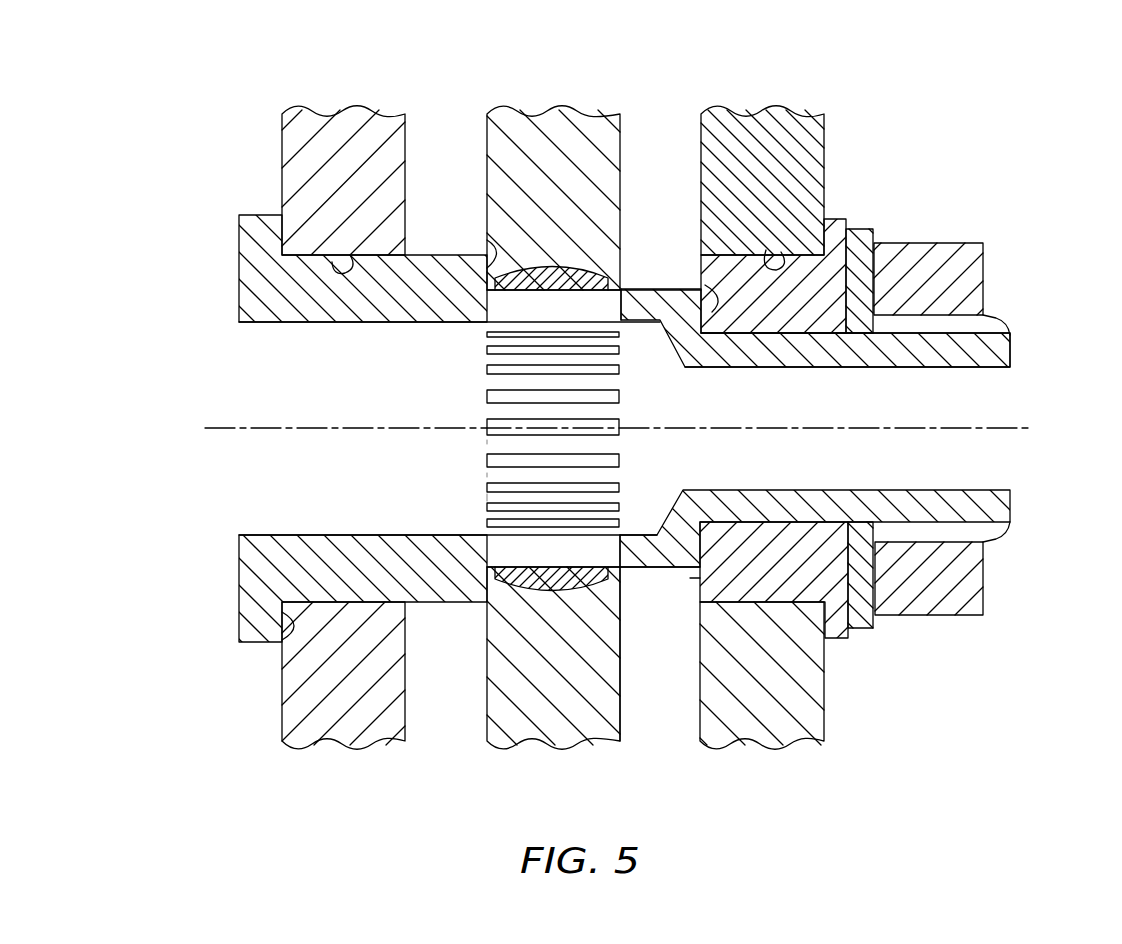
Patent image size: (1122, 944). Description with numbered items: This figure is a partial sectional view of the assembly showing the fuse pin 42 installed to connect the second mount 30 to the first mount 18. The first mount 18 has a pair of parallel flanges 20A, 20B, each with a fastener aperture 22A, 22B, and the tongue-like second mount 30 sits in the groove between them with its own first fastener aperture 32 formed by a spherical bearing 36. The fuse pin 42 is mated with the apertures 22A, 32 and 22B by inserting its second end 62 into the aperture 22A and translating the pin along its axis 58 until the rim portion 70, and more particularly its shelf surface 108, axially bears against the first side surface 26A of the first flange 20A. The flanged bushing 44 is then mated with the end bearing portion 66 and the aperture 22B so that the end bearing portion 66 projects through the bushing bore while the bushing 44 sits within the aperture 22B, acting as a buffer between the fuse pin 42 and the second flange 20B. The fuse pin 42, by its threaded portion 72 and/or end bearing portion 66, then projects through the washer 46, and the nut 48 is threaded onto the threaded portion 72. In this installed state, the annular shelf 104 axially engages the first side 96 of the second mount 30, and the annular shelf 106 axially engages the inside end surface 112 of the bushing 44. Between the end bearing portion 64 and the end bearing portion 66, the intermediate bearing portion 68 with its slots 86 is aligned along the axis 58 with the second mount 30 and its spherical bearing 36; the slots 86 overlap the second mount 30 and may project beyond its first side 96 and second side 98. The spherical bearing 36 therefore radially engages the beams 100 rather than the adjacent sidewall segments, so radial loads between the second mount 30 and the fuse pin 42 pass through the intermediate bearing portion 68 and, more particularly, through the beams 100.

The first mount 18 is at (565, 140).
The first mount flange 20A is at (358, 104).
The second mount flange 20B is at (789, 104).
The fastener aperture 22A is at (334, 262).
The fastener aperture 22B is at (766, 250).
The first side surface 26A is at (290, 746).
The second mount 30 is at (576, 104).
The first fastener aperture 32 is at (575, 293).
The spherical bearing 36 is at (545, 265).
The fuse pin 42 is at (232, 302).
The flanged bushing 44 is at (838, 219).
The washer 46 is at (860, 230).
The nut 48 is at (985, 255).
The axis 58 is at (205, 432).
The second end 62 is at (1008, 505).
The end bearing portion 64 is at (342, 333).
The end bearing portion 66 is at (750, 373).
The intermediate bearing portion 68 is at (548, 429).
The rim portion 70 is at (258, 330).
The threaded portion 72 is at (958, 369).
The slots 86 is at (622, 490).
The first side 96 is at (488, 742).
The second side 98 is at (621, 742).
The beams 100 is at (487, 498).
The annular shelf 104 is at (487, 262).
The annular shelf 106 is at (712, 290).
The shelf surface 108 is at (282, 632).
The inside end surface 112 is at (700, 578).